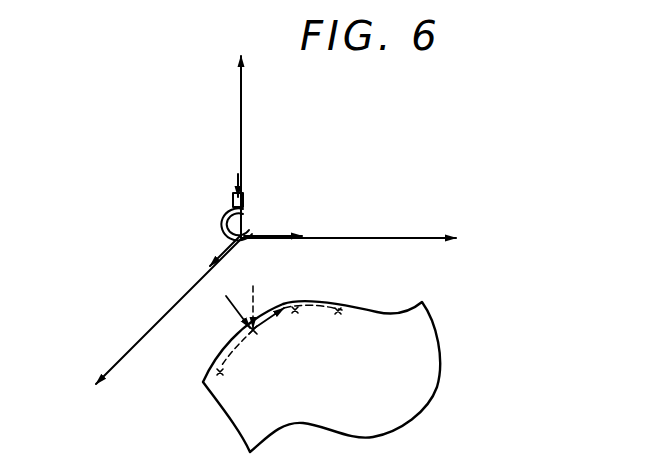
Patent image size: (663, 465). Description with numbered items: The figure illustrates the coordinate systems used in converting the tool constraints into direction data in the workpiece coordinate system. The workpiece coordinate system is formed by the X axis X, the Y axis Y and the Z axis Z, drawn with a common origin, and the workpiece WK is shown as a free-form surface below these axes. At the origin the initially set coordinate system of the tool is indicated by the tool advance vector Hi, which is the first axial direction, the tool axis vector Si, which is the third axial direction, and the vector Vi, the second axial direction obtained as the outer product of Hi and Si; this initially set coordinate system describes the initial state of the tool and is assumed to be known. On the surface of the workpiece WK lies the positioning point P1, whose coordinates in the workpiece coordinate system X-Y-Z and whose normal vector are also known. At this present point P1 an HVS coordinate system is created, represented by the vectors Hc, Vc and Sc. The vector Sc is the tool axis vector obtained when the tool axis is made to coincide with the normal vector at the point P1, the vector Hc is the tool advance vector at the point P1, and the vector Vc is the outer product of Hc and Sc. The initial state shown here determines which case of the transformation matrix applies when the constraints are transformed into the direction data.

The X axis X is at (158, 314).
The Y axis Y is at (359, 239).
The Z axis Z is at (253, 133).
The tool axis vector Si is at (222, 178).
The second axial direction vector Vi is at (280, 223).
The tool advance vector Hi is at (208, 255).
The tool axis vector at present point Sc is at (256, 292).
The outer product vector at present point Vc is at (229, 303).
The tool advance vector at present point Hc is at (297, 304).
The positioning point P1 is at (300, 345).
The workpiece WK is at (420, 387).